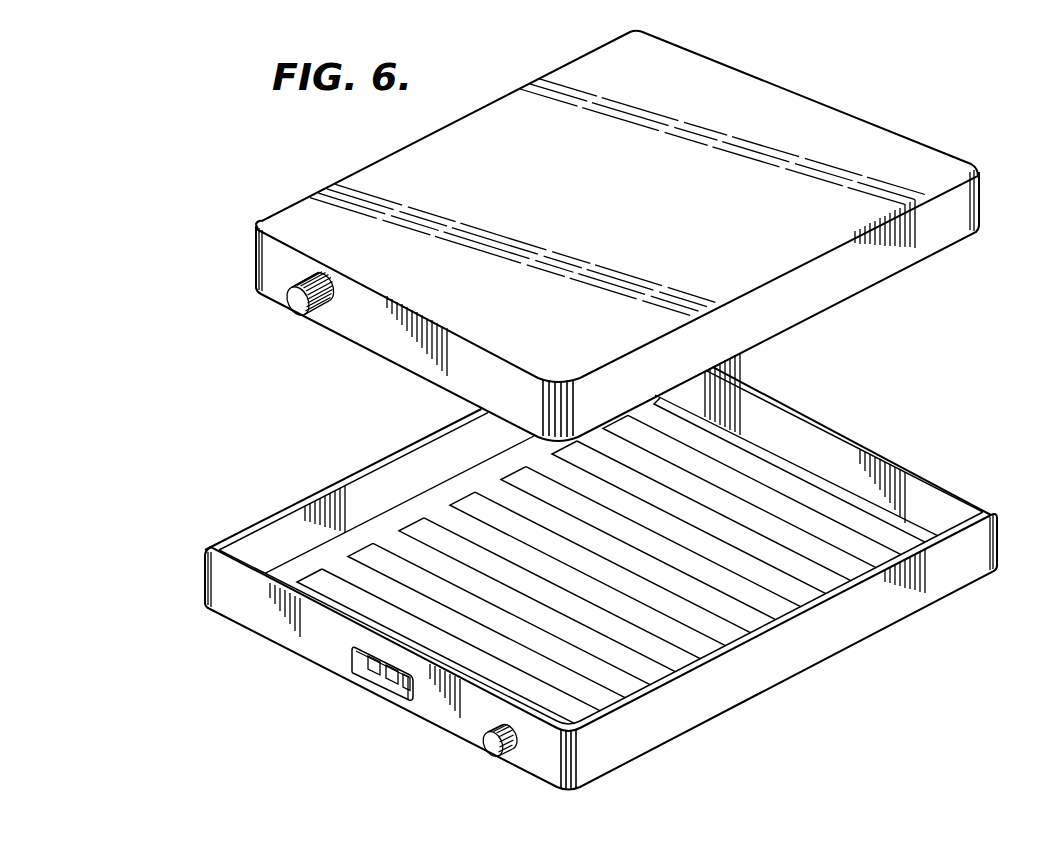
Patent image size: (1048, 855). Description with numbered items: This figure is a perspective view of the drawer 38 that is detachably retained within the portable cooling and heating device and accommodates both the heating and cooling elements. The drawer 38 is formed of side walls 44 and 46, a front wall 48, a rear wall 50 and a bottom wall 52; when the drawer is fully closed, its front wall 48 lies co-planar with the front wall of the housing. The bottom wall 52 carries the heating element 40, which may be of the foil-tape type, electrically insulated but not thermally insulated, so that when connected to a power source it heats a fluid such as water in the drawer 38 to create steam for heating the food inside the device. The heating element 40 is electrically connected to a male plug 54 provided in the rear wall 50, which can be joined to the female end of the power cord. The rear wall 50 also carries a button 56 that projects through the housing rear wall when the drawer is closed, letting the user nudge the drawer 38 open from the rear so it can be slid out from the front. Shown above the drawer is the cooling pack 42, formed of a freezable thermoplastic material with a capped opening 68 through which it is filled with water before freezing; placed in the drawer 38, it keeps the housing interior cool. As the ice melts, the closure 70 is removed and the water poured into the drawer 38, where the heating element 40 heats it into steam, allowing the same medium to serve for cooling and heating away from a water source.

The drawer 38 is at (1000, 538).
The heating element 40 is at (412, 530).
The cooling pack 42 is at (618, 208).
The side wall 44 is at (790, 660).
The side wall 46 is at (407, 441).
The front wall 48 is at (862, 438).
The rear wall 50 is at (246, 616).
The bottom wall 52 is at (307, 562).
The male plug 54 is at (376, 682).
The button 56 is at (486, 750).
The capped opening 68 is at (296, 308).
The closure 70 is at (302, 284).